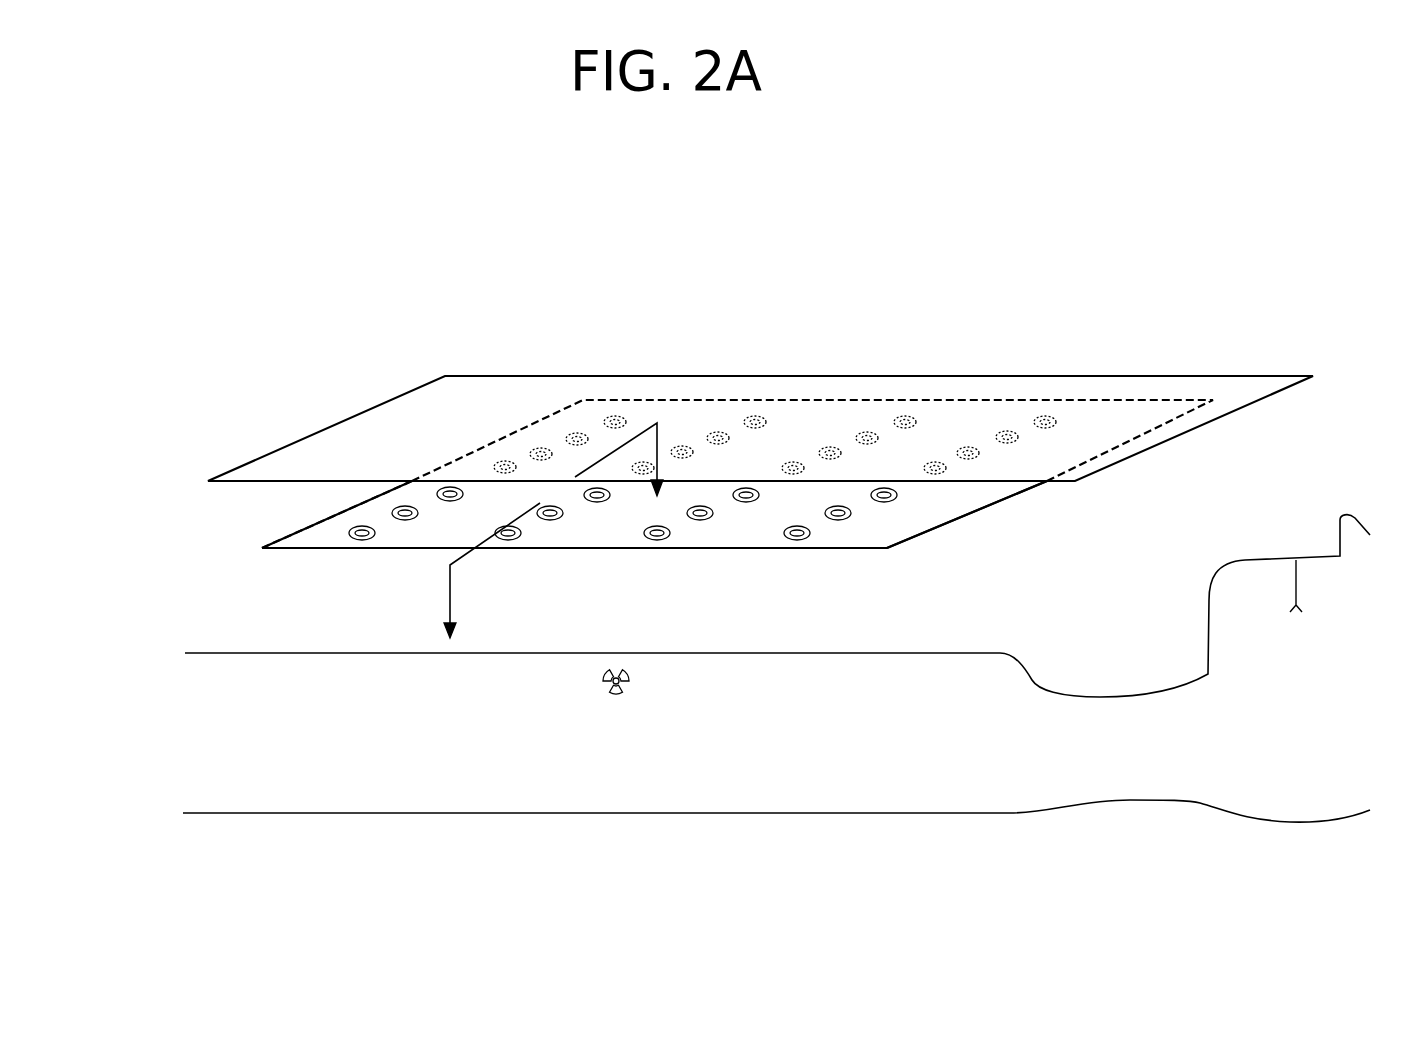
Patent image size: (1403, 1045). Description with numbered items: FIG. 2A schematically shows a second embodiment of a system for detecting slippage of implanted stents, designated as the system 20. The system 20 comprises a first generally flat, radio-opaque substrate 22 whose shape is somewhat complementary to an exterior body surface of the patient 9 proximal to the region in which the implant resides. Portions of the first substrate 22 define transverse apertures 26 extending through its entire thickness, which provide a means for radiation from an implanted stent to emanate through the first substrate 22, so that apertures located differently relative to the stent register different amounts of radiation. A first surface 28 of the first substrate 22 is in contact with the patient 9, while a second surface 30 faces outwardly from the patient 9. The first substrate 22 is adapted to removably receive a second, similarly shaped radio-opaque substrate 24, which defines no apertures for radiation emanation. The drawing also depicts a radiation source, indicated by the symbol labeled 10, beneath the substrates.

The second embodiment of a system for detecting stent slippage 20 is at (721, 404).
The first generally flat, radio-opaque substrate 22 is at (690, 459).
The second, similarly shaped radio-opaque substrate 24 is at (1266, 357).
The transverse apertures 26 is at (1047, 417).
The first surface 28 is at (757, 522).
The second surface 30 is at (895, 530).
The radiation source 10 is at (625, 698).
The patient 9 is at (776, 669).